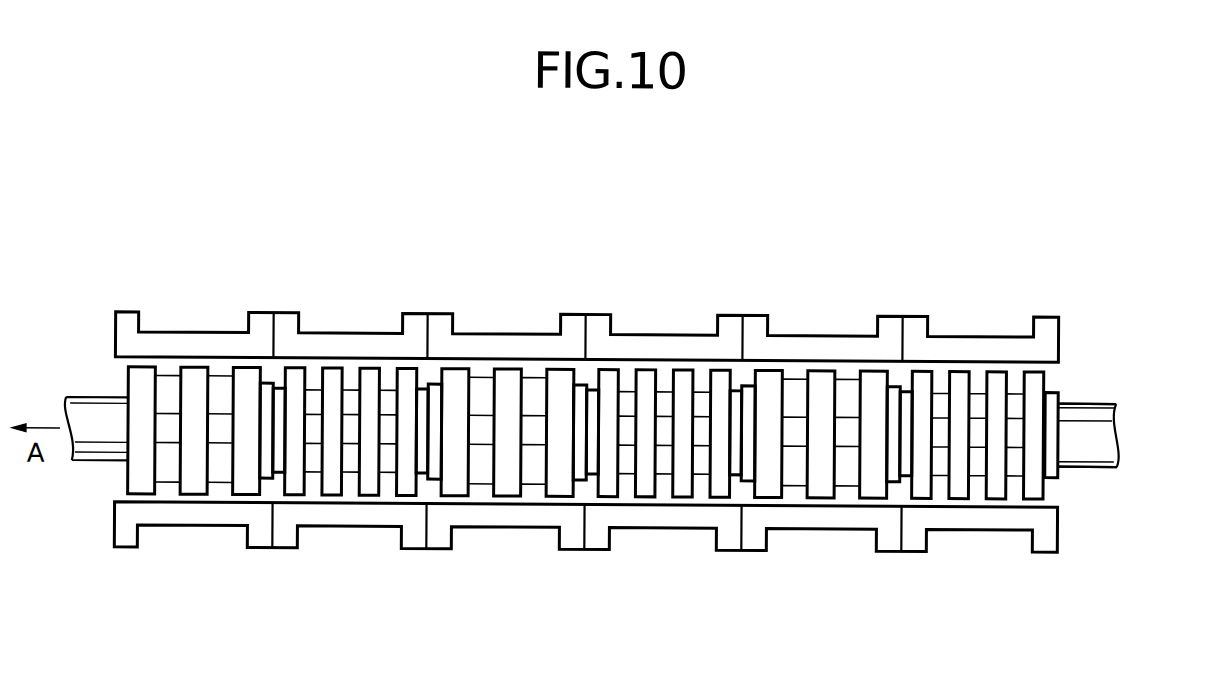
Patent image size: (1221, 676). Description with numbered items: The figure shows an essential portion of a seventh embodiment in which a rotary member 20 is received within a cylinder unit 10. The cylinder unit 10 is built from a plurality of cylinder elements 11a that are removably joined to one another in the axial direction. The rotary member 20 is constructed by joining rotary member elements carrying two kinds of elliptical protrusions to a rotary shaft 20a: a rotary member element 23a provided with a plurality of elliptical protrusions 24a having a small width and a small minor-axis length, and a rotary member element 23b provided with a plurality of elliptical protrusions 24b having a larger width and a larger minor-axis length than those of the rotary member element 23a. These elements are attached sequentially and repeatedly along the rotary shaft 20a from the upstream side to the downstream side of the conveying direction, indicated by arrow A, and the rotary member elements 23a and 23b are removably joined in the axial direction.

The cylinder unit 10 is at (727, 251).
The cylinder element 11a is at (976, 336).
The rotary member 20 is at (1081, 358).
The rotary shaft 20a is at (1108, 440).
The rotary member element 23a is at (313, 482).
The rotary member element 23b is at (168, 482).
The elliptical protrusion 24a is at (333, 489).
The elliptical protrusion 24b is at (192, 487).